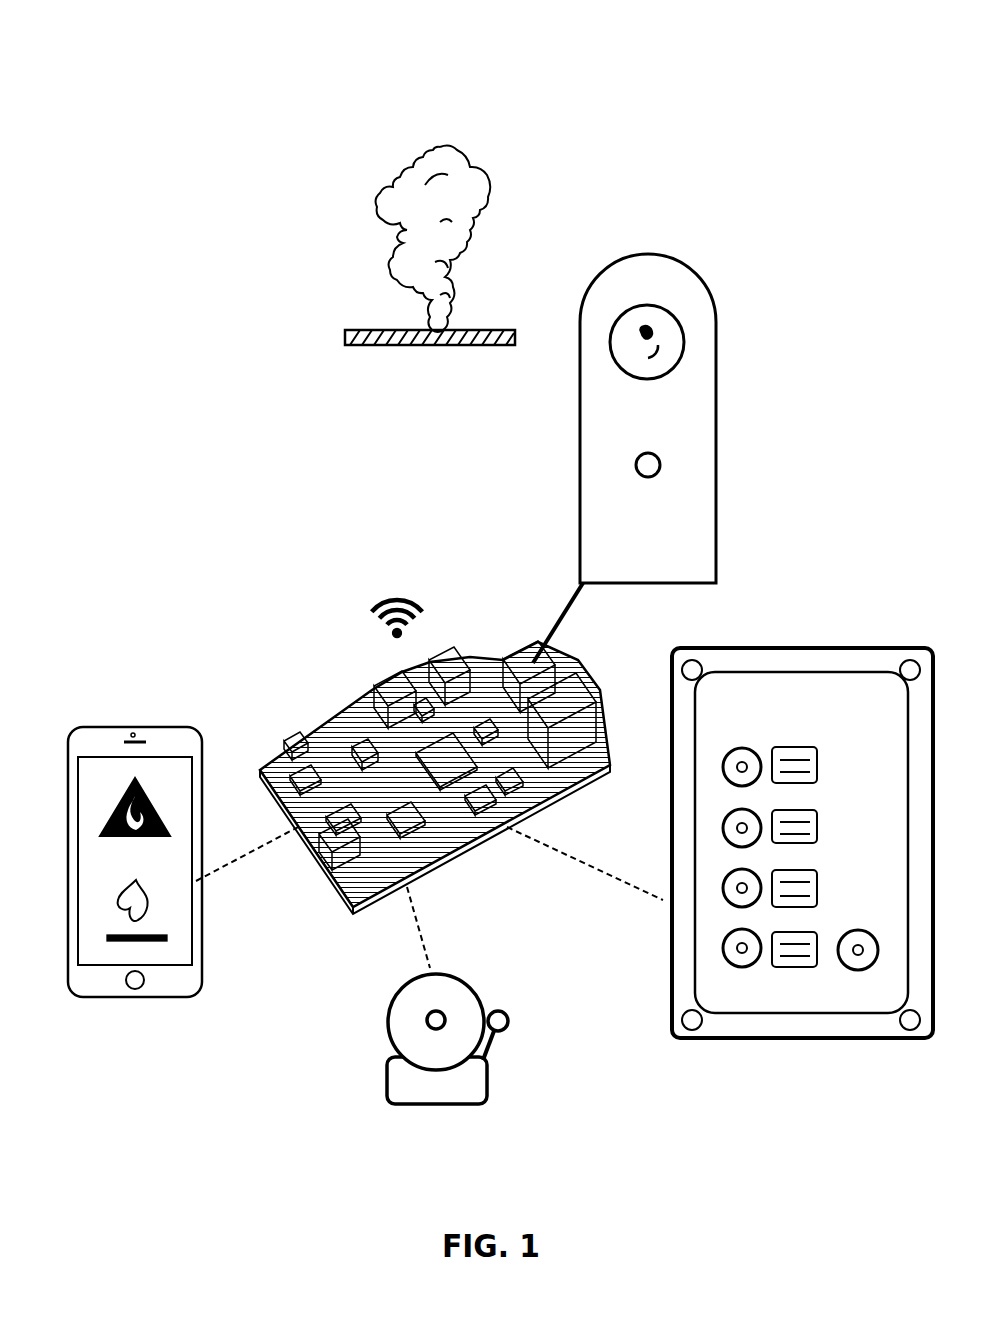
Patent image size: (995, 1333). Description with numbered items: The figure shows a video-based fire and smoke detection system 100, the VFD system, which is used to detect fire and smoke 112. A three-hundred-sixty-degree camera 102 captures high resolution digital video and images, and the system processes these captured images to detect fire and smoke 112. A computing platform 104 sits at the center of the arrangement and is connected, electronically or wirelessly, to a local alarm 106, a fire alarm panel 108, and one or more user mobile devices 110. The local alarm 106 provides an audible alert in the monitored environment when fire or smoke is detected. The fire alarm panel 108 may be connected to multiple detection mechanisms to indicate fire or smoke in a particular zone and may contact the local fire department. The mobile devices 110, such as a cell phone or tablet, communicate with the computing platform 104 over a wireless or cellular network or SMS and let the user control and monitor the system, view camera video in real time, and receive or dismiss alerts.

The video-based fire and smoke detection system 100 is at (680, 118).
The 360-degree camera 102 is at (717, 362).
The computing platform 104 is at (268, 713).
The local alarm 106 is at (494, 990).
The fire alarm panel 108 is at (783, 627).
The mobile devices 110 is at (207, 967).
The fire and smoke 112 is at (365, 237).